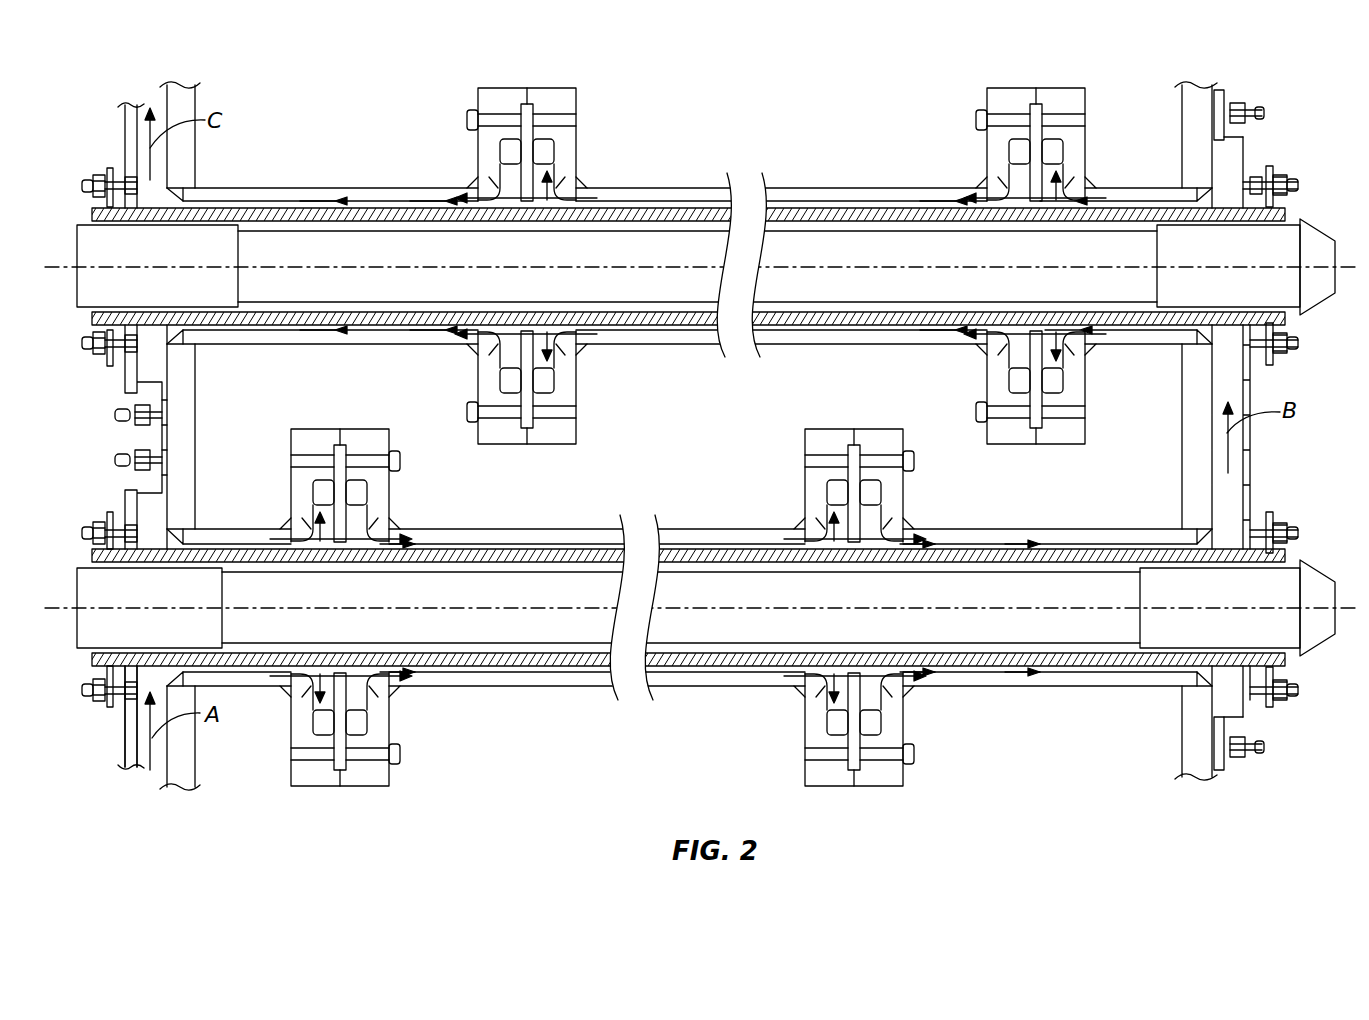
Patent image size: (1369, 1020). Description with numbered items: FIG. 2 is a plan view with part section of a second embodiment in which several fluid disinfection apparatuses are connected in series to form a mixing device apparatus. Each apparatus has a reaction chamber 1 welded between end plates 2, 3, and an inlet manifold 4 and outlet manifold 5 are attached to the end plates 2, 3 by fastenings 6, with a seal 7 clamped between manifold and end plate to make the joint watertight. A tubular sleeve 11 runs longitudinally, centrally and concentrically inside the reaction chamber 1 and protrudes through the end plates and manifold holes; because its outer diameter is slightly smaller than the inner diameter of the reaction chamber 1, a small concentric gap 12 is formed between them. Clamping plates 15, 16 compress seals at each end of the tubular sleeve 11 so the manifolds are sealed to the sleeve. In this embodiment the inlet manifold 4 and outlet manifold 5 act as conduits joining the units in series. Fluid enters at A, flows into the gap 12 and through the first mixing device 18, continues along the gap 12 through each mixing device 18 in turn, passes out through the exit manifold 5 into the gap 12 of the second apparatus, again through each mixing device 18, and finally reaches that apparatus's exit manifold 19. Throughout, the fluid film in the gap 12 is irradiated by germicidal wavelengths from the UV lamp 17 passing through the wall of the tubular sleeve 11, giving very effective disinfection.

The reaction chamber 1 is at (652, 190).
The end plate 2 is at (1190, 745).
The end plate 3 is at (183, 762).
The inlet manifold 4 is at (130, 740).
The outlet manifold 5 is at (1248, 393).
The fastenings 6 is at (90, 178).
The seal 7 is at (1225, 95).
The tubular sleeve 11 is at (665, 323).
The concentric gap 12 is at (813, 203).
The clamping plate 15 is at (110, 710).
The clamping plate 16 is at (1265, 700).
The UV lamp 17 is at (837, 283).
The mixing device 18 is at (555, 97).
The exit manifold 19 is at (128, 137).